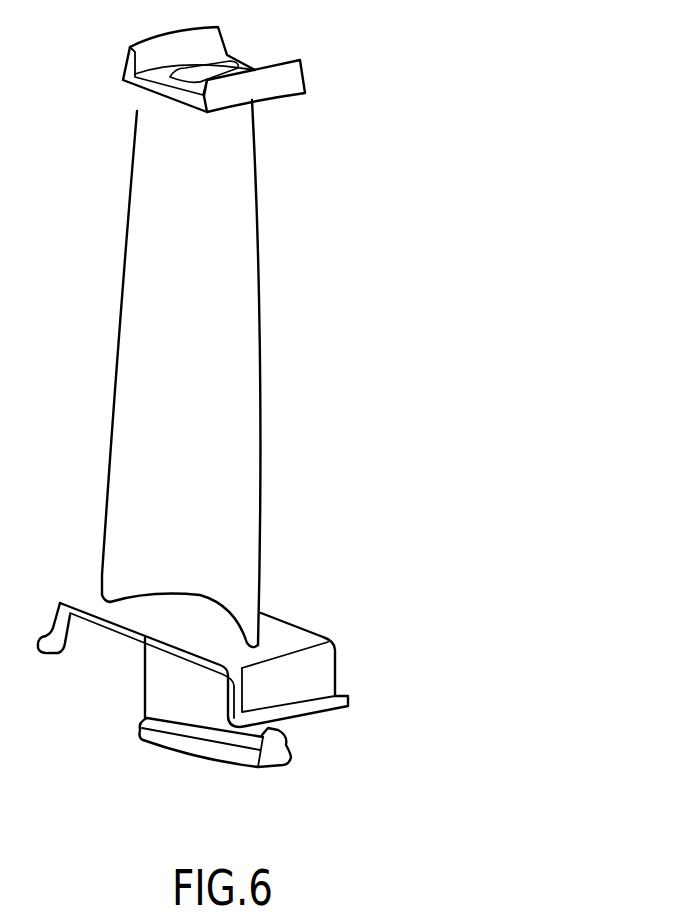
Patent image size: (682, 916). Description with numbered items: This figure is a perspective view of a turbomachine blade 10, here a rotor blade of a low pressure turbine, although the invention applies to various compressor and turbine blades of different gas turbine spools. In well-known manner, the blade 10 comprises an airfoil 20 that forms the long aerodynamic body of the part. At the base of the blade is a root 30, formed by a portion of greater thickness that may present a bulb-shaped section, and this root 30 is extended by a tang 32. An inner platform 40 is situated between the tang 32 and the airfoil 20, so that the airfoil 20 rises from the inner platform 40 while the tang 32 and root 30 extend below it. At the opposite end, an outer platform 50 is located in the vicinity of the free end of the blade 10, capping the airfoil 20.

The blade 10 is at (90, 370).
The airfoil 20 is at (245, 348).
The root 30 is at (303, 755).
The tang 32 is at (172, 693).
The inner platform 40 is at (287, 637).
The outer platform 50 is at (126, 42).